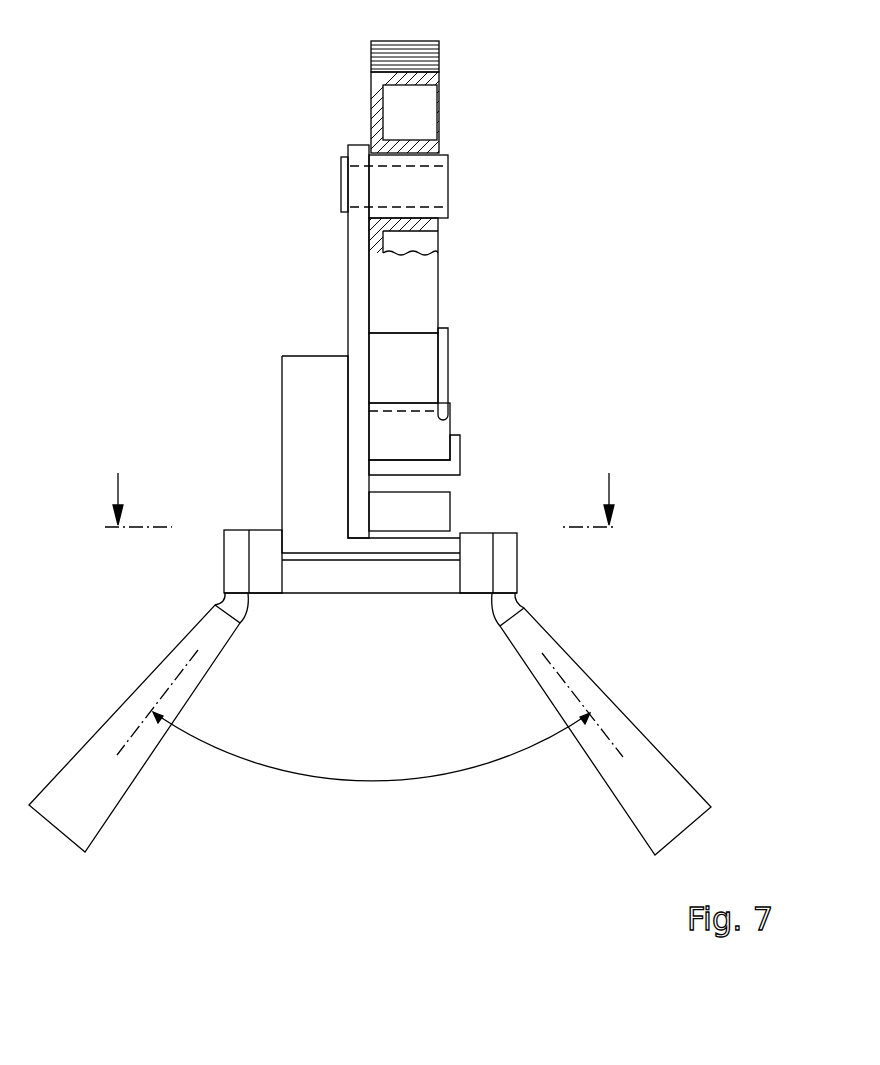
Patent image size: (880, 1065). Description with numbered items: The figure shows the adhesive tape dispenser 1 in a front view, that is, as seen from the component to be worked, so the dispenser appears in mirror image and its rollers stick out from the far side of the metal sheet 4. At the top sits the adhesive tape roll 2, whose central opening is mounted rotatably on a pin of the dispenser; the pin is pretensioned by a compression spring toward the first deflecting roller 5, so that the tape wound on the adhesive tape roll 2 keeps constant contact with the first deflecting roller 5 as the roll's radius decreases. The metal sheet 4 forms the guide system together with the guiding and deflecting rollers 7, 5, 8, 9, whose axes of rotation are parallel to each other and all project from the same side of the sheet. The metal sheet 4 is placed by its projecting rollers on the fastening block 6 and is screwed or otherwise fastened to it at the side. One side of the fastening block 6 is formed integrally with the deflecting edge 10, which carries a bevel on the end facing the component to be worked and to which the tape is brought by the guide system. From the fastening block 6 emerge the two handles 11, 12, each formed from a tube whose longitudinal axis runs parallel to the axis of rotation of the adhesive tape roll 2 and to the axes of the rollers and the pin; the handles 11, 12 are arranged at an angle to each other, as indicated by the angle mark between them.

The adhesive tape dispenser 1 is at (258, 181).
The adhesive tape roll 2 is at (412, 53).
The metal sheet 4 is at (357, 295).
The first deflecting roller 5 is at (415, 366).
The fastening block 6 is at (305, 515).
The guiding and deflecting roller 7 is at (428, 438).
The guiding and deflecting roller 8 is at (433, 510).
The guiding and deflecting roller 9 is at (460, 452).
The deflecting edge 10 is at (440, 555).
The handle 11 is at (93, 760).
The handle 12 is at (635, 763).